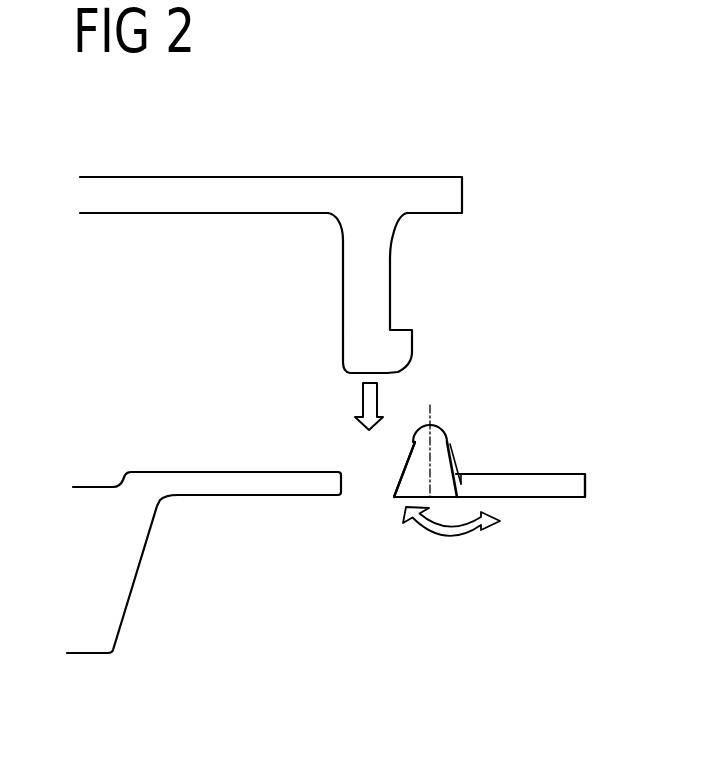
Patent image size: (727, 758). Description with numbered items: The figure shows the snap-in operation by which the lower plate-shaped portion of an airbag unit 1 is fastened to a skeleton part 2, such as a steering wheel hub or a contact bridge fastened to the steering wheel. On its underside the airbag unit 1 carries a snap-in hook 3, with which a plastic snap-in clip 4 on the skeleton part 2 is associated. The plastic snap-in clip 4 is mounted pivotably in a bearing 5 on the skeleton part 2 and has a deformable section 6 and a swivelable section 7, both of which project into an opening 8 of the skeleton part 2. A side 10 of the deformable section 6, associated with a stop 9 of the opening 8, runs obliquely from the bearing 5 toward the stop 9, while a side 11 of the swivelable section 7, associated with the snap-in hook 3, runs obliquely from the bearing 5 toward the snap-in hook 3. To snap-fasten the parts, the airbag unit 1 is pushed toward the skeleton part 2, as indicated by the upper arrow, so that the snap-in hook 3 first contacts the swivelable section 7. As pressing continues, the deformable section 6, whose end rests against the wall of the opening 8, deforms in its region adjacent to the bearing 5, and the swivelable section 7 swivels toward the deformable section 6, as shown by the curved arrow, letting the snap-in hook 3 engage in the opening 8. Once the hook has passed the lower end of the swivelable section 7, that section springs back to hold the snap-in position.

The airbag unit 1 is at (427, 190).
The skeleton part 2 is at (507, 497).
The snap-in hook 3 is at (378, 299).
The plastic snap-in clip 4 is at (460, 441).
The bearing 5 is at (437, 433).
The deformable section 6 is at (455, 462).
The swivelable section 7 is at (415, 464).
The opening 8 is at (370, 488).
The stop 9 is at (460, 485).
The side of the deformable section 10 is at (455, 452).
The side of the swivelable section 11 is at (401, 480).